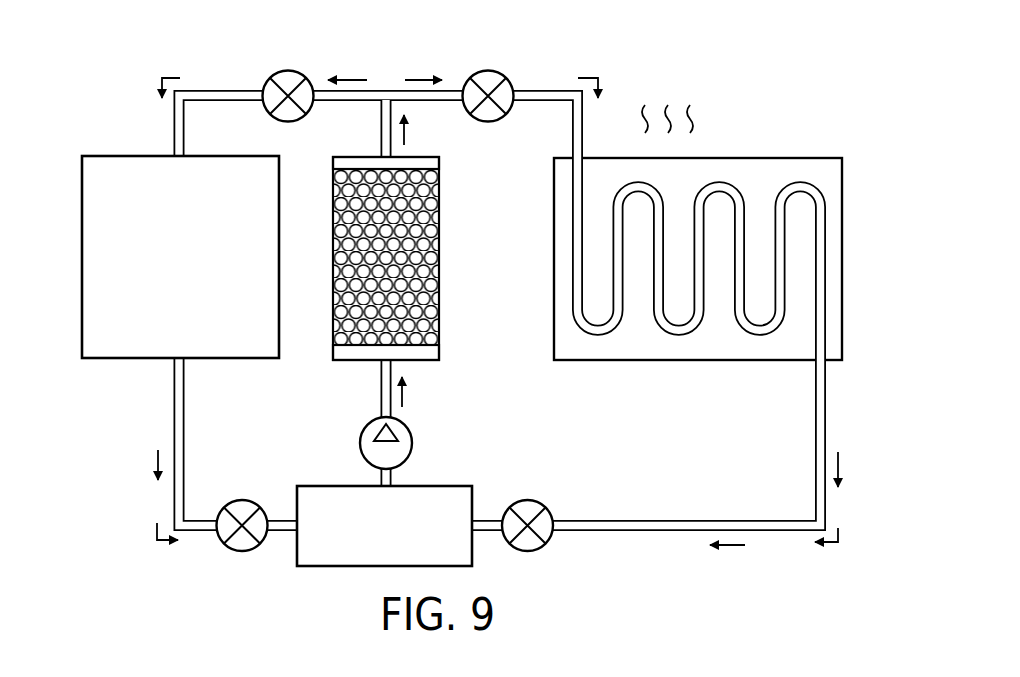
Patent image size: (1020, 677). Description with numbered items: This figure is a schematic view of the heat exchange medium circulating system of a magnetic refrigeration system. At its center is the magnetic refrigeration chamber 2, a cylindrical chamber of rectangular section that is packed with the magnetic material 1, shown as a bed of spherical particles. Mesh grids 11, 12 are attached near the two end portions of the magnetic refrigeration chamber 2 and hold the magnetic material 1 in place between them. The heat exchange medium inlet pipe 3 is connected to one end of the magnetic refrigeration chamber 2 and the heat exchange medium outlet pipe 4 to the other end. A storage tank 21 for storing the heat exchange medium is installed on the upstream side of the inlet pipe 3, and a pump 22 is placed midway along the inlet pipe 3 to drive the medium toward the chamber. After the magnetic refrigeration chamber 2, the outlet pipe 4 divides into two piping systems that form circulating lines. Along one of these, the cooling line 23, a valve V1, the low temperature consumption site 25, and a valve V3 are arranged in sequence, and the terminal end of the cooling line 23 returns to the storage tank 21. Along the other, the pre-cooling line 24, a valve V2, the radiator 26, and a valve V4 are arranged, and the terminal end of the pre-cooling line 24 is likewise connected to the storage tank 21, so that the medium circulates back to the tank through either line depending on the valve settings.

The magnetic material 1 is at (407, 256).
The magnetic refrigeration chamber 2 is at (439, 289).
The inlet pipe 3 is at (380, 381).
The outlet pipe 4 is at (380, 132).
The mesh grid 11 is at (425, 349).
The mesh grid 12 is at (428, 158).
The storage tank 21 is at (310, 485).
The pump 22 is at (412, 443).
The cooling line 23 is at (226, 88).
The pre-cooling line 24 is at (558, 88).
The low temperature consumption site 25 is at (105, 361).
The radiator 26 is at (798, 158).
The valve V1 is at (289, 70).
The valve V2 is at (489, 70).
The valve V3 is at (245, 500).
The valve V4 is at (529, 500).